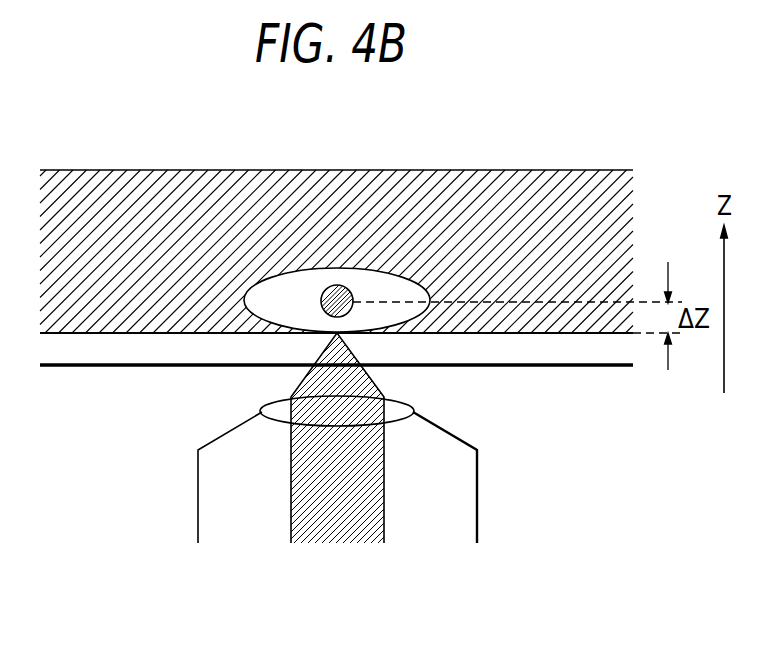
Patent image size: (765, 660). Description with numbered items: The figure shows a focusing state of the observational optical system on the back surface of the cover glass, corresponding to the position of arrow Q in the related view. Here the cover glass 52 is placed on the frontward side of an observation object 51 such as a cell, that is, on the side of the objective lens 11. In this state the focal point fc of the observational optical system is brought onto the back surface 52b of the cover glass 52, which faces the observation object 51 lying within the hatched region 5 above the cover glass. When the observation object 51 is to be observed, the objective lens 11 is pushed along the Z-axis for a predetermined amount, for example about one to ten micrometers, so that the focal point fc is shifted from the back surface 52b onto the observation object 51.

The optical disc 5 is at (657, 179).
The observation object 51 is at (374, 270).
The cover glass 52 is at (95, 372).
The back surface of the cover glass 52b is at (133, 332).
The focal point fc is at (321, 339).
The objective lens 11 is at (478, 472).